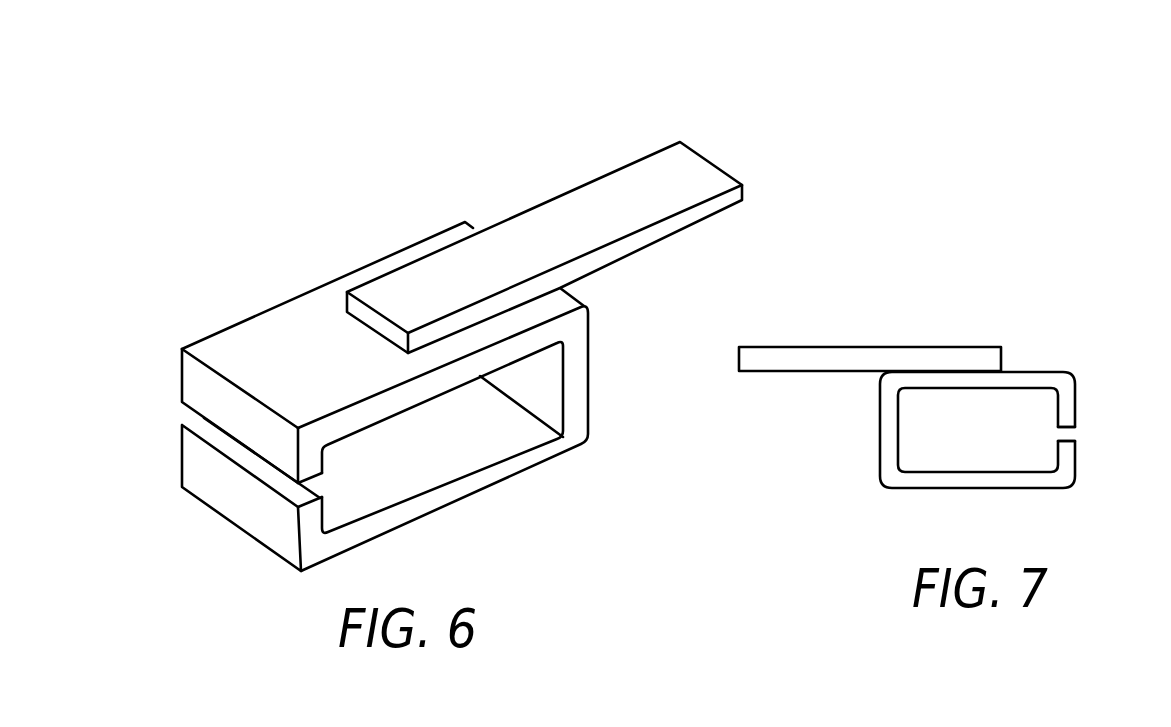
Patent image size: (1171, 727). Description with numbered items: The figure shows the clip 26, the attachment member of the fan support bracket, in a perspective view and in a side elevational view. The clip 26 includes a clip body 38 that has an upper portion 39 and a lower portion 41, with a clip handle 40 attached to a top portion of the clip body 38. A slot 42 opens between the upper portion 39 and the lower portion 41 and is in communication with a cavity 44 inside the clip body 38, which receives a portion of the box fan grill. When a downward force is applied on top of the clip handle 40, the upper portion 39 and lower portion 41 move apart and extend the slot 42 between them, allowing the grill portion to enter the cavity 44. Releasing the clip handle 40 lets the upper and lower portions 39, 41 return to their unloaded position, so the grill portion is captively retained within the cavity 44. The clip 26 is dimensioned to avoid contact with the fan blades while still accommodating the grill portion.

In FIG. 6, the clip 26 is at (564, 112).
In FIG. 7, the clip 26 is at (1080, 330).
In FIG. 6, the clip body 38 is at (575, 343).
In FIG. 7, the clip body 38 is at (898, 478).
In FIG. 6, the upper portion 39 is at (197, 387).
In FIG. 6, the clip handle 40 is at (693, 173).
In FIG. 7, the clip handle 40 is at (783, 347).
In FIG. 6, the lower portion 41 is at (197, 462).
In FIG. 6, the slot 42 is at (264, 482).
In FIG. 7, the slot 42 is at (1087, 430).
In FIG. 6, the cavity 44 is at (405, 471).
In FIG. 7, the cavity 44 is at (961, 458).